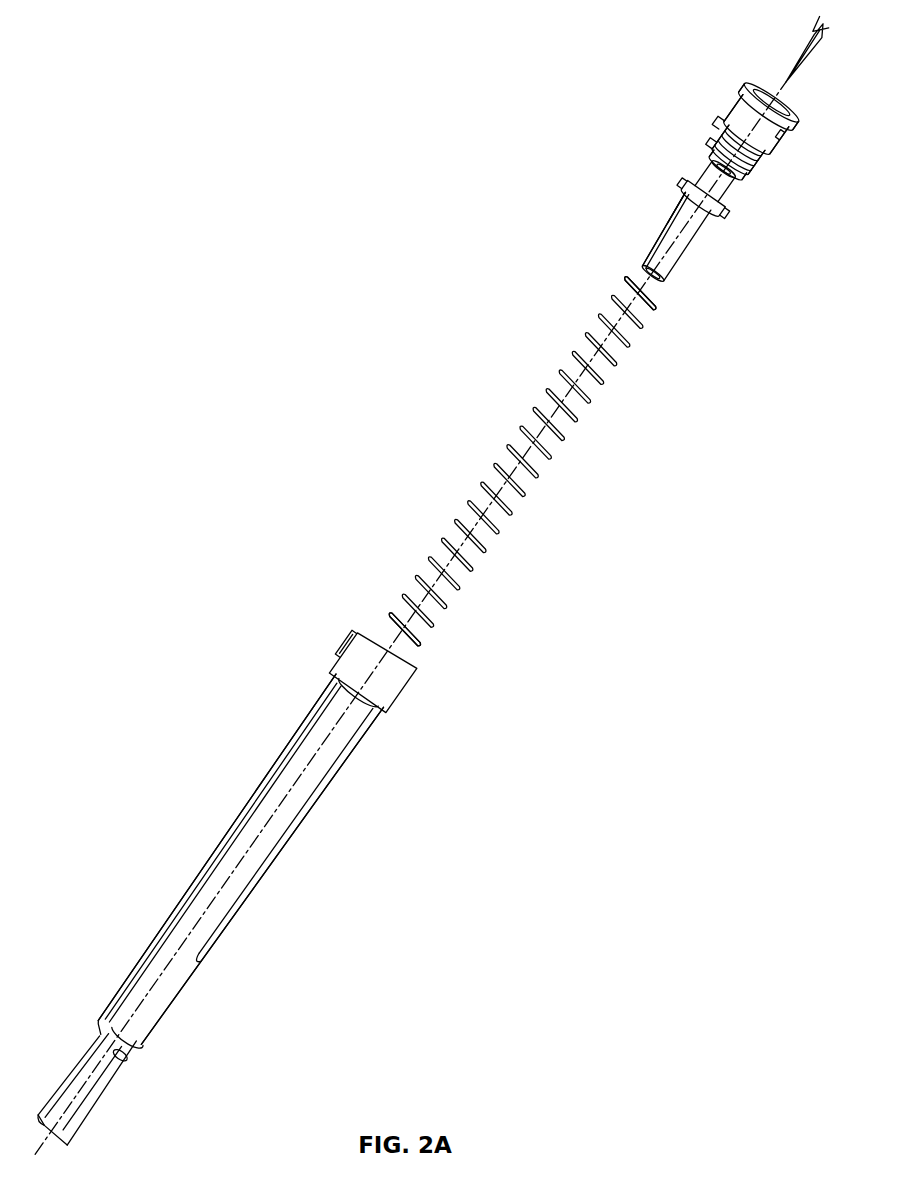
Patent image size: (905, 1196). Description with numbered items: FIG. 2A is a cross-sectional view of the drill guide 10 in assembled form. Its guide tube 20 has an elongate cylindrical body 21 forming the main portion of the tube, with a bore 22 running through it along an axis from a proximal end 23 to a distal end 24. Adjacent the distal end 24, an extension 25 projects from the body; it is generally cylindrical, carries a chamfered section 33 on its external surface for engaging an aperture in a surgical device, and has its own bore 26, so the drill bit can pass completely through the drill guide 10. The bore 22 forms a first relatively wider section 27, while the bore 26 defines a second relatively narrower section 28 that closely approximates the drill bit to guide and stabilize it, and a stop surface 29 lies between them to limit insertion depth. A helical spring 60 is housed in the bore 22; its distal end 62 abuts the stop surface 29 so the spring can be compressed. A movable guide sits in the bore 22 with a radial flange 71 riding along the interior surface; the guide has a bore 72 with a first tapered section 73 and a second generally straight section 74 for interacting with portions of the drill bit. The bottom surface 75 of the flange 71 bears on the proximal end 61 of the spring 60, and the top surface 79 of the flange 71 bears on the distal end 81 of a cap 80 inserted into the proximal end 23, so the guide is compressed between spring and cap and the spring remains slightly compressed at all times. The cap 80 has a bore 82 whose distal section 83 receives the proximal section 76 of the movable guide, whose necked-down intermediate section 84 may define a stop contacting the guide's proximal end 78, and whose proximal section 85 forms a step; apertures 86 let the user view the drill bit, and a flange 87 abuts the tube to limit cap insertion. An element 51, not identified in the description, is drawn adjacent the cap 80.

The drill guide 10 is at (441, 332).
The guide tube 20 is at (280, 882).
The elongate cylindrical body 21 is at (352, 752).
The bore 22 is at (305, 788).
The proximal end 23 is at (358, 638).
The distal end 24 is at (62, 1142).
The extension 25 is at (112, 1081).
The bore 26 is at (88, 1097).
The first relatively wider section 27 is at (168, 1002).
The second relatively narrower section 28 is at (130, 1058).
The stop surface 29 is at (118, 1007).
The chamfered section 33 is at (50, 1128).
The needle 51 is at (811, 58).
The spring 60 is at (497, 469).
The proximal end 61 is at (652, 298).
The distal end 62 is at (420, 640).
The radial flange 71 is at (699, 240).
The bore 72 is at (661, 274).
The first tapered section 73 is at (731, 181).
The second generally straight section 74 is at (656, 245).
The bottom surface 75 is at (676, 204).
The proximal section 76 is at (727, 206).
The proximal end 78 is at (703, 168).
The top surface 79 is at (684, 182).
The cap 80 is at (756, 88).
The distal end 81 is at (747, 179).
The bore 82 is at (793, 106).
The distal section 83 is at (722, 138).
The intermediate section 84 is at (753, 169).
The proximal section 85 is at (771, 96).
The apertures 86 is at (783, 136).
The flange 87 is at (719, 124).